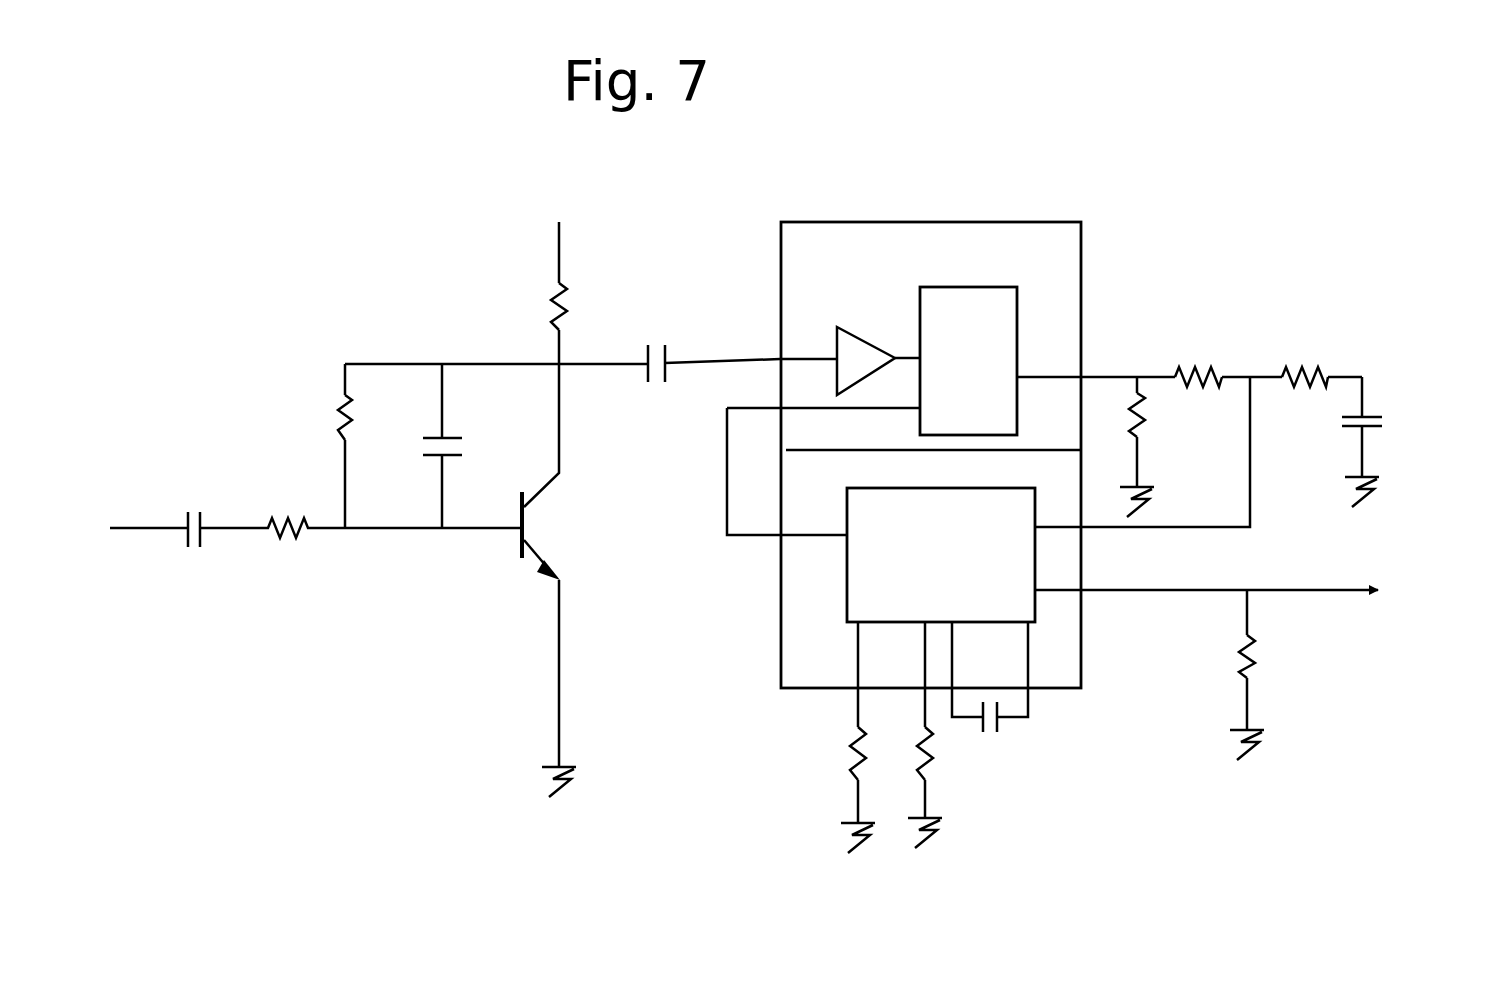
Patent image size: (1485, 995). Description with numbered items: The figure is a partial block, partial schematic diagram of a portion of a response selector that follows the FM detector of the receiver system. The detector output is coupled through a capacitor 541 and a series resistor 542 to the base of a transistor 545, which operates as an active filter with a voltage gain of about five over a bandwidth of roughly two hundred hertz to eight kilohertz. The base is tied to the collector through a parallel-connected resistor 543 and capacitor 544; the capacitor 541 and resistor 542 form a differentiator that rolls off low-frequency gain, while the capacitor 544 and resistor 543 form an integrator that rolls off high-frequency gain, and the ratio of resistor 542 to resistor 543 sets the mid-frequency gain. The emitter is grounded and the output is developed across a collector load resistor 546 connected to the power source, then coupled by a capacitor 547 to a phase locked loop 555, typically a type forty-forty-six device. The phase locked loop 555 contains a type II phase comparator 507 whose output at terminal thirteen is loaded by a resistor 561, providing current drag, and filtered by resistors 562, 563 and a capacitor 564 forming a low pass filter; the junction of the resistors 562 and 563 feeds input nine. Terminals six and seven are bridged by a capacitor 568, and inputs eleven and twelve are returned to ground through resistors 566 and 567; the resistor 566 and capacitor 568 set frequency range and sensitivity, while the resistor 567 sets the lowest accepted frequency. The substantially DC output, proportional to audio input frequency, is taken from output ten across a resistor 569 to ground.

The capacitor 541 is at (203, 548).
The series resistor 542 is at (295, 538).
The resistor 543 is at (336, 412).
The capacitor 544 is at (452, 438).
The transistor 545 is at (533, 531).
The collector load resistor 546 is at (565, 307).
The capacitor 547 is at (650, 382).
The phase locked loop 555 is at (904, 415).
The type II phase comparator 507 is at (960, 287).
The resistor 561 is at (1142, 420).
The resistor 562 is at (1197, 372).
The resistor 563 is at (1305, 372).
The capacitor 564 is at (1380, 423).
The resistor 566 is at (855, 753).
The resistor 567 is at (932, 757).
The capacitor 568 is at (1000, 722).
The resistor 569 is at (1257, 672).